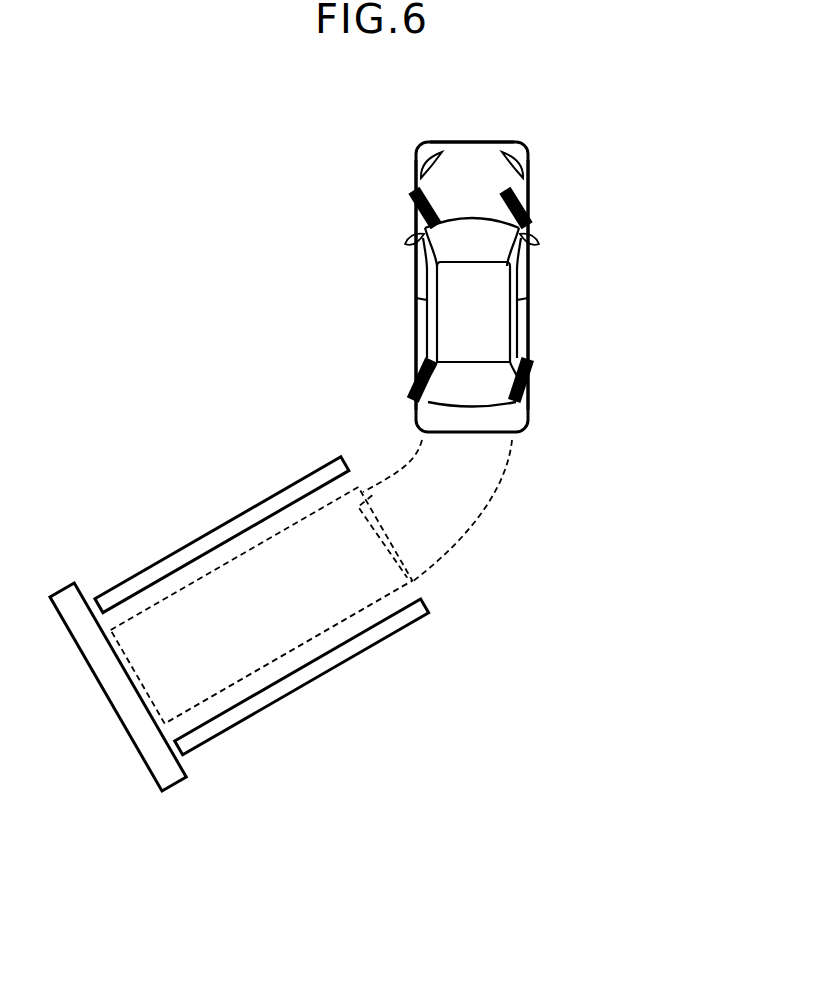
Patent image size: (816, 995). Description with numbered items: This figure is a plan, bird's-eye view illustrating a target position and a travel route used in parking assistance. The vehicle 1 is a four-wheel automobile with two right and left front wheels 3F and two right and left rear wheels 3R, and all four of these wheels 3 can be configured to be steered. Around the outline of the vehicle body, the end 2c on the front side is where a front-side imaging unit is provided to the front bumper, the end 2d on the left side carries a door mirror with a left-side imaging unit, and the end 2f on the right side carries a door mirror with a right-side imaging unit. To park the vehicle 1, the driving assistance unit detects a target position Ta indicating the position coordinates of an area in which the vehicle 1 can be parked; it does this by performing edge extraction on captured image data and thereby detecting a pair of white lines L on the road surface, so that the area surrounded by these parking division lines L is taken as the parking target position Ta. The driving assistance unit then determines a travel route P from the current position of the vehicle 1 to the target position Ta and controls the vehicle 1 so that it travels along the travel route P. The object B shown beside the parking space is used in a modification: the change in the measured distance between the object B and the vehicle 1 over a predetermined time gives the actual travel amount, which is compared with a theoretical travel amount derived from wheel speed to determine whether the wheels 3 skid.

The vehicle 1 is at (460, 136).
The end on the front side of the vehicle body 2c is at (487, 140).
The end on the left side of the vehicle body 2d is at (417, 258).
The end on the right side of the vehicle body 2f is at (529, 259).
The wheels 3 is at (485, 283).
The front wheels 3F is at (410, 195).
The rear wheels 3R is at (412, 392).
The white lines L is at (118, 585).
The target position Ta is at (275, 660).
The object B is at (172, 790).
The travel route P is at (470, 530).